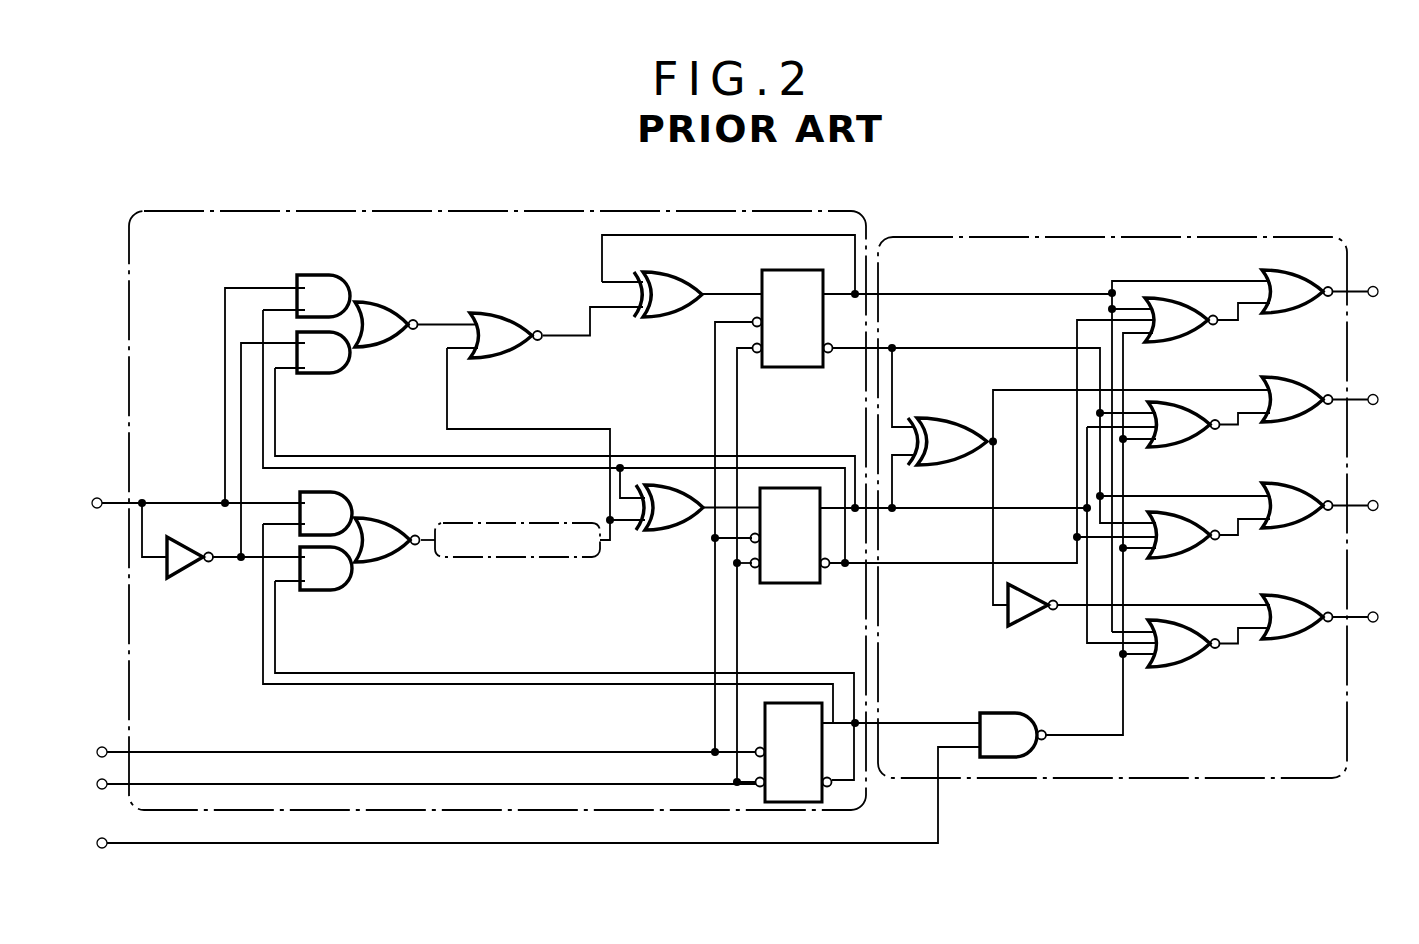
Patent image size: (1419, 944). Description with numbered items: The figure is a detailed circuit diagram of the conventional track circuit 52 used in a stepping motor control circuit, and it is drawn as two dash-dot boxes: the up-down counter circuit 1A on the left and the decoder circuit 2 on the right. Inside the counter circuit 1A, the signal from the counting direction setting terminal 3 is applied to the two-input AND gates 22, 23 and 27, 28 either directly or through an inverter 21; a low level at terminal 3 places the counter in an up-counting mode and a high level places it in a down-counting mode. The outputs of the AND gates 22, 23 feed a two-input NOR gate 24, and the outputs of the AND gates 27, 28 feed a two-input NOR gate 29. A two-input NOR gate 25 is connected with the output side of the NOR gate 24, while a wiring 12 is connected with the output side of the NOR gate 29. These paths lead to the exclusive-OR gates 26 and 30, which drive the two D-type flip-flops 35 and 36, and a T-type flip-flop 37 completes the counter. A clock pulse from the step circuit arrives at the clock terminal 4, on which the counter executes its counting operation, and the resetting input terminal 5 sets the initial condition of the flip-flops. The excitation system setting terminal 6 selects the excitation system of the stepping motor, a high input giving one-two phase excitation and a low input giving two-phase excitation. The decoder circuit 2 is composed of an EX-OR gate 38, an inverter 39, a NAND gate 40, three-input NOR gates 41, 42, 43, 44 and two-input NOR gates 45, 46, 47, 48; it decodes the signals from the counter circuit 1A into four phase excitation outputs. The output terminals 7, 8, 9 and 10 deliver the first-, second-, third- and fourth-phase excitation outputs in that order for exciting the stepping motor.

The up-down counter circuit 1A is at (489, 210).
The decoder circuit 2 is at (1126, 232).
The track circuit 52 is at (940, 200).
The counting direction setting terminal 3 is at (97, 497).
The clock terminal 4 is at (103, 746).
The resetting input terminal 5 is at (106, 790).
The excitation system setting terminal 6 is at (106, 849).
The output terminal 7 is at (1373, 285).
The output terminal 8 is at (1373, 393).
The output terminal 9 is at (1373, 499).
The output terminal 10 is at (1373, 611).
The wiring 12 is at (492, 557).
The inverter 21 is at (194, 568).
The two-input AND gate 22 is at (326, 273).
The two-input AND gate 23 is at (326, 375).
The two-input NOR gate 24 is at (388, 300).
The two-input NOR gate 25 is at (501, 312).
The exclusive-OR gate 26 is at (677, 318).
The two-input AND gate 27 is at (338, 491).
The two-input AND gate 28 is at (340, 592).
The two-input NOR gate 29 is at (395, 530).
The exclusive-OR gate 30 is at (665, 531).
The D-type flip-flop 35 is at (805, 369).
The D-type flip-flop 36 is at (800, 585).
The T-type flip-flop 37 is at (806, 803).
The exclusive-OR gate 38 is at (947, 422).
The inverter 39 is at (1028, 628).
The NAND gate 40 is at (990, 711).
The three-input NOR gate 41 is at (1175, 343).
The three-input NOR gate 42 is at (1168, 448).
The three-input NOR gate 43 is at (1185, 559).
The three-input NOR gate 44 is at (1185, 668).
The two-input NOR gate 45 is at (1290, 314).
The two-input NOR gate 46 is at (1300, 423).
The two-input NOR gate 47 is at (1290, 529).
The two-input NOR gate 48 is at (1300, 640).